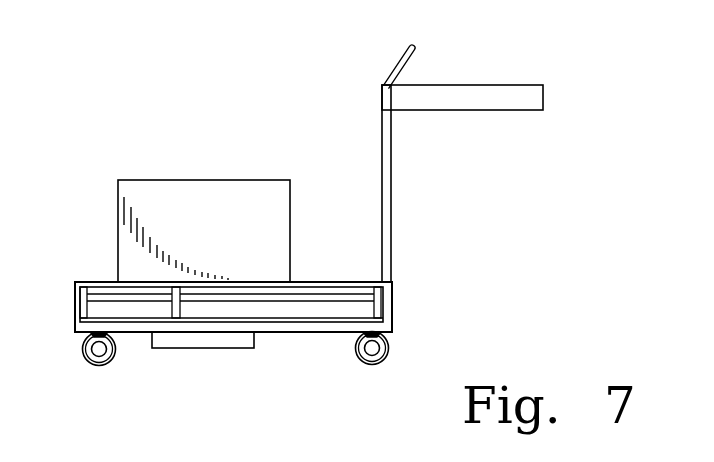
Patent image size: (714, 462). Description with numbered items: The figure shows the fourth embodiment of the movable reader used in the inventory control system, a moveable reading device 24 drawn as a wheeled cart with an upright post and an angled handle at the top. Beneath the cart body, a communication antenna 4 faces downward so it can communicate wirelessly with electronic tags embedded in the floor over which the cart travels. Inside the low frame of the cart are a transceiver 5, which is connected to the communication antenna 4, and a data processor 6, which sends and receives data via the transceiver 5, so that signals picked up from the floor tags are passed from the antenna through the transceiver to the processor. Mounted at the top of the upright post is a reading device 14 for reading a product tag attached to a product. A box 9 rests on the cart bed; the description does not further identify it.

The communication antenna 4 is at (205, 341).
The transceiver 5 is at (107, 308).
The data processor 6 is at (315, 303).
The container / box 9 is at (232, 234).
The reading device 14 is at (478, 110).
The moveable reading device 24 is at (381, 140).